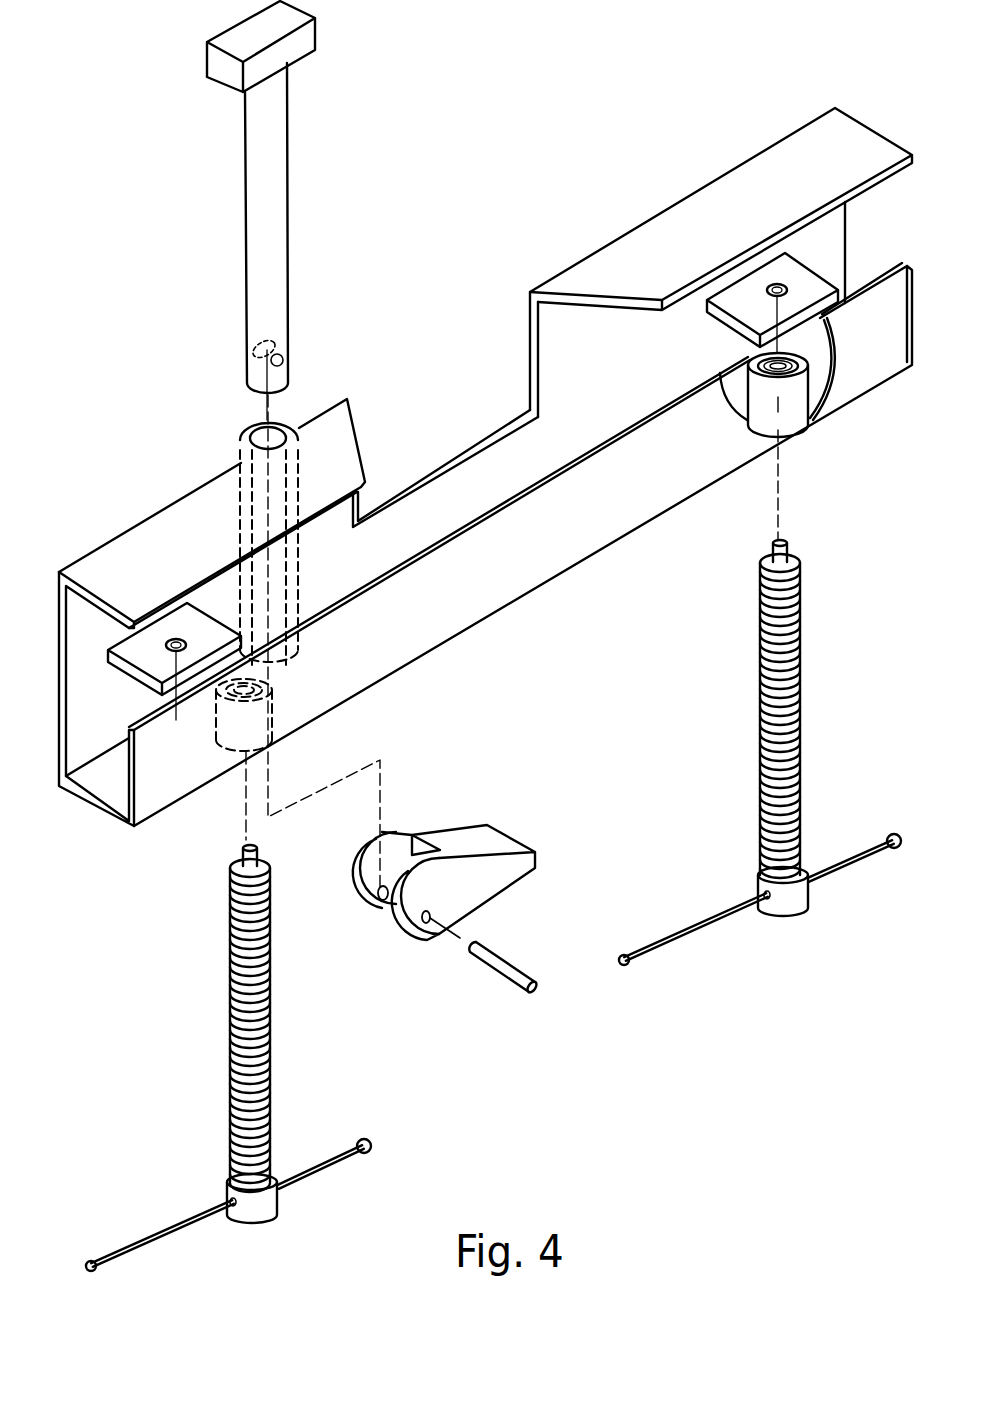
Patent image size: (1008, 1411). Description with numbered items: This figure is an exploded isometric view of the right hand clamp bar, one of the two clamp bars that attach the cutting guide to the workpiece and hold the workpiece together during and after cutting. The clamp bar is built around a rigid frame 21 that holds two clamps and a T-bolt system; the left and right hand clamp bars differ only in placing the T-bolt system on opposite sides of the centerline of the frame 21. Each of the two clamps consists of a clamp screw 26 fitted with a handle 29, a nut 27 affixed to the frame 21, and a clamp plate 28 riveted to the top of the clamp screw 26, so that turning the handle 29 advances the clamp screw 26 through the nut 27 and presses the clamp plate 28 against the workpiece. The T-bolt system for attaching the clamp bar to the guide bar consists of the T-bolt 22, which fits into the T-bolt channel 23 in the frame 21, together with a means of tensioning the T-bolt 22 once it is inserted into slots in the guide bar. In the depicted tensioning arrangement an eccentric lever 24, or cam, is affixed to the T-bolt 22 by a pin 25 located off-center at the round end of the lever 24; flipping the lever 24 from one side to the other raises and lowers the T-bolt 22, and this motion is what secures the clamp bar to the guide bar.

The frame 21 is at (578, 534).
The T-bolt 22 is at (257, 237).
The T-bolt channel 23 is at (238, 457).
The lever 24 is at (474, 897).
The pin 25 is at (500, 967).
The clamp screw 26 is at (772, 690).
The nut 27 is at (790, 400).
The clamp plate 28 is at (746, 308).
The handle 29 is at (632, 968).